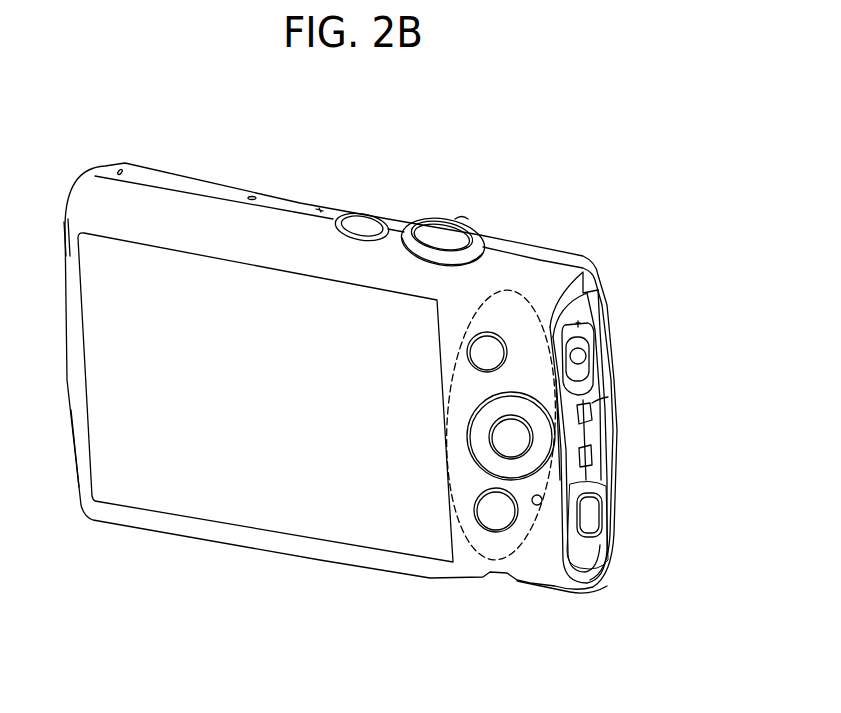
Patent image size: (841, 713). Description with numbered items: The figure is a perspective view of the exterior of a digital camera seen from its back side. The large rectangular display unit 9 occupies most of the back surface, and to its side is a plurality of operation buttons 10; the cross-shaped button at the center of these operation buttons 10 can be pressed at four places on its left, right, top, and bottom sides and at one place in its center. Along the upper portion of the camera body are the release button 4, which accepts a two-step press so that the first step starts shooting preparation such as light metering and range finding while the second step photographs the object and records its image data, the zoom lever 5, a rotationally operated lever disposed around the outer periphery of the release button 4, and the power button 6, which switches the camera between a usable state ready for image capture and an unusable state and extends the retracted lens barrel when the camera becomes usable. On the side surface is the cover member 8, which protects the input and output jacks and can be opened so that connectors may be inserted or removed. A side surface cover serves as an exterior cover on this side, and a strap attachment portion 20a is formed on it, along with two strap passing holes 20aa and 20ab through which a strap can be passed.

The release button 4 is at (430, 233).
The zoom lever 5 is at (463, 218).
The power button 6 is at (362, 225).
The cover member 8 is at (608, 350).
The display unit 9 is at (305, 488).
The operation buttons 10 is at (512, 540).
The strap attachment portion 20a is at (582, 441).
The strap passing hole 20aa is at (612, 397).
The strap passing hole 20ab is at (590, 445).